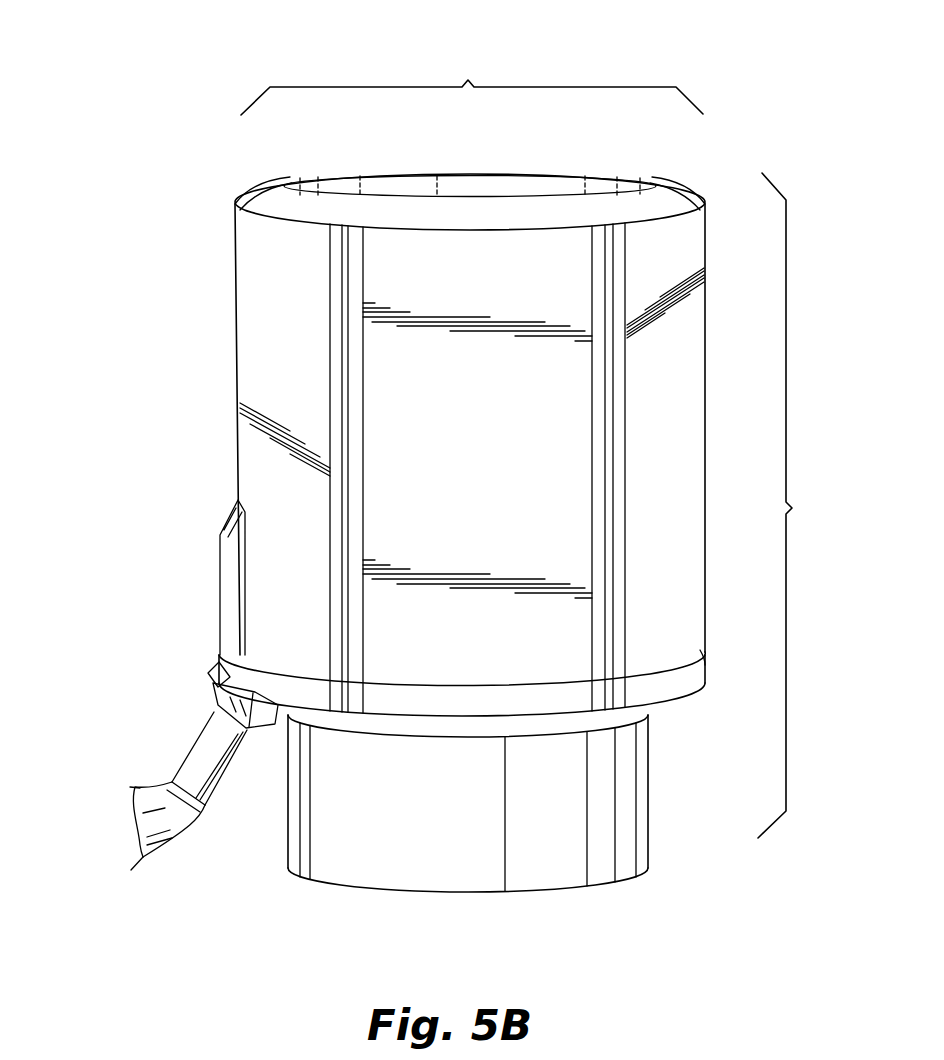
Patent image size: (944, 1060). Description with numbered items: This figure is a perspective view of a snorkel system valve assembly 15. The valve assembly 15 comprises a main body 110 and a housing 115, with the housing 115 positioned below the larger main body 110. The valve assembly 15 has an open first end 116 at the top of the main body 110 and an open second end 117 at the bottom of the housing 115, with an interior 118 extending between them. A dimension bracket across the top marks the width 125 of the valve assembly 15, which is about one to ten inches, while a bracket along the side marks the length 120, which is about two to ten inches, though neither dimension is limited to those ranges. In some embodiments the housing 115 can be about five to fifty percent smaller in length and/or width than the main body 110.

The valve assembly 15 is at (108, 190).
The main body 110 is at (323, 377).
The housing 115 is at (335, 796).
The first end 116 is at (565, 190).
The second end 117 is at (565, 886).
The interior 118 is at (390, 480).
The length 120 is at (791, 508).
The width 125 is at (468, 80).